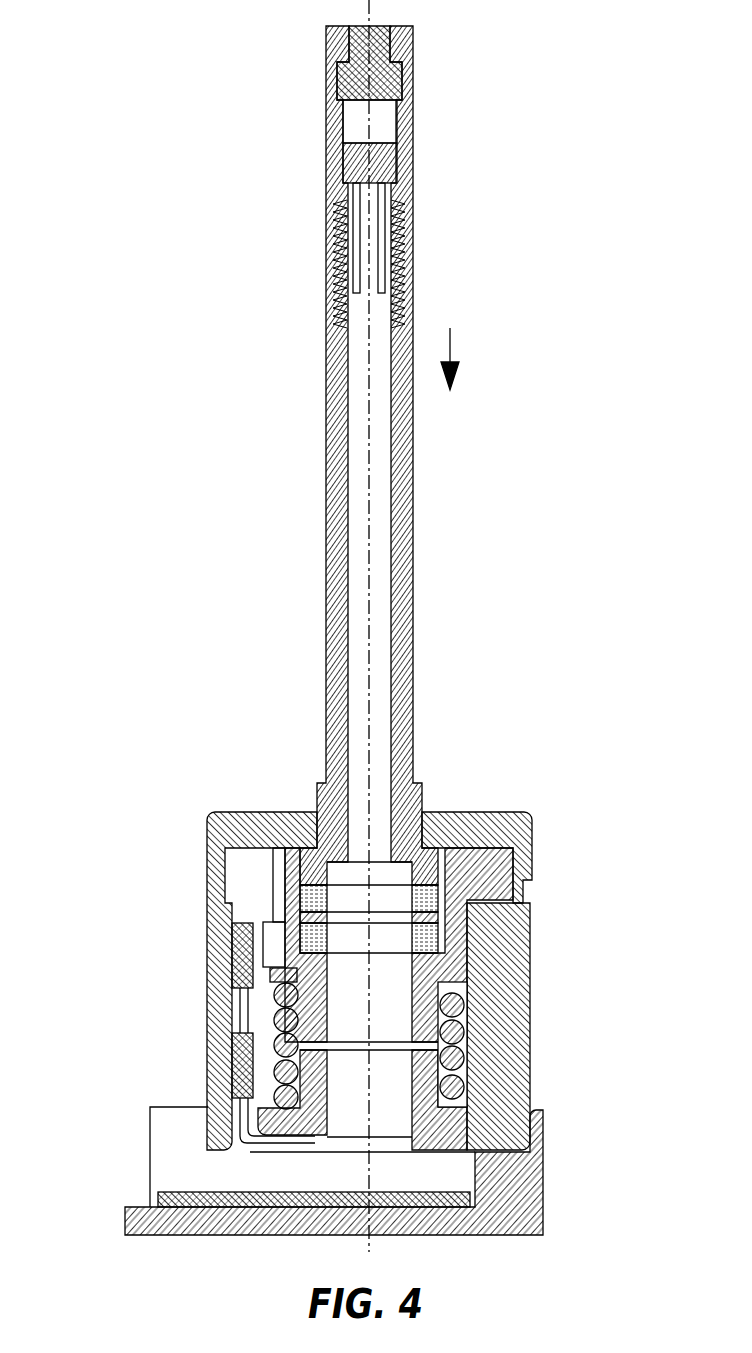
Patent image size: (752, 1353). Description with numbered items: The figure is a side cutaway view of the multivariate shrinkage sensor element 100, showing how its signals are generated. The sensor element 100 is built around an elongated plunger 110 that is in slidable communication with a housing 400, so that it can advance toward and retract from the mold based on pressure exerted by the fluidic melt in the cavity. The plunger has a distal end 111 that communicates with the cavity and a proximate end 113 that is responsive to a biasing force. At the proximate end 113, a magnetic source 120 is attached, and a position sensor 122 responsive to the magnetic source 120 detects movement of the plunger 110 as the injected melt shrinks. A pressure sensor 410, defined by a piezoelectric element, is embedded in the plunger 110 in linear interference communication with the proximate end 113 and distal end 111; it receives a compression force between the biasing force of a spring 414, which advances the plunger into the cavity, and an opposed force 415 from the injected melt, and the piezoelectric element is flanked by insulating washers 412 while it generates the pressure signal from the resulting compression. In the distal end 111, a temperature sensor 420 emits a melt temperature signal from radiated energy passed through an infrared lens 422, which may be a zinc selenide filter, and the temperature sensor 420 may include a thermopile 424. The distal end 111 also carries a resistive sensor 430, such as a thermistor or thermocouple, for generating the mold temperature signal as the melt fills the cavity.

The sensor element 100 is at (262, 489).
The elongated plunger 110 is at (380, 488).
The distal end 111 is at (339, 104).
The proximate end 113 is at (152, 1037).
The magnetic source 120 is at (273, 932).
The position sensor 122 is at (233, 957).
The housing 400 is at (530, 1000).
The pressure sensor 410 is at (432, 918).
The insulating washers 412 is at (432, 937).
The spring 414 is at (458, 1088).
The opposed force 415 is at (450, 348).
The temperature sensor 420 is at (383, 157).
The infrared lens 422 is at (396, 72).
The thermopile 424 is at (397, 113).
The resistive sensor 430 is at (410, 205).